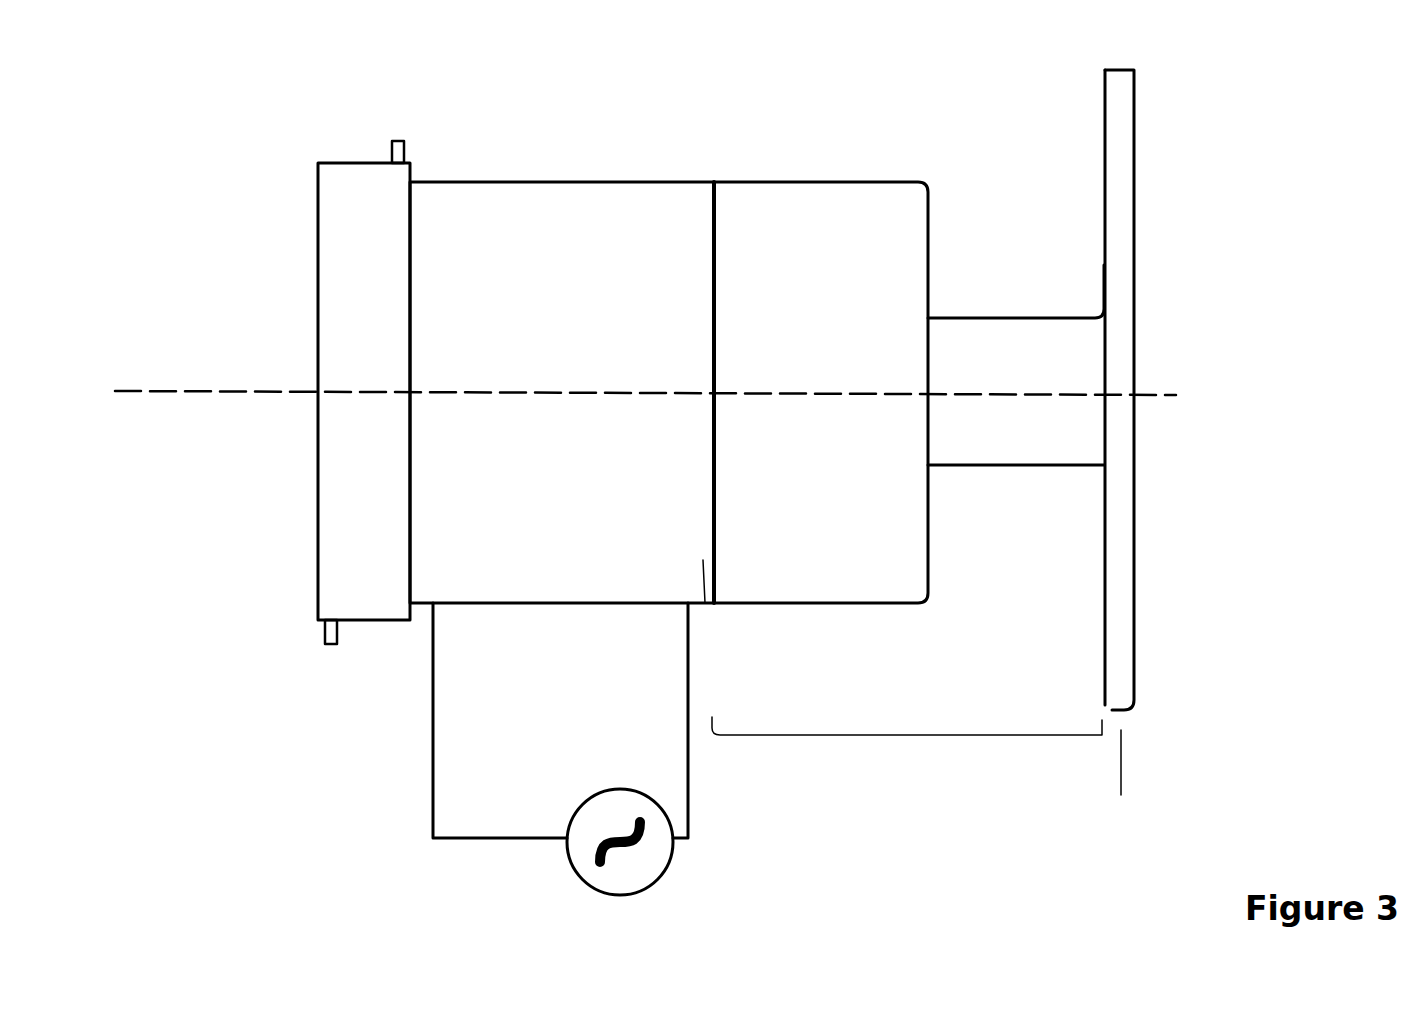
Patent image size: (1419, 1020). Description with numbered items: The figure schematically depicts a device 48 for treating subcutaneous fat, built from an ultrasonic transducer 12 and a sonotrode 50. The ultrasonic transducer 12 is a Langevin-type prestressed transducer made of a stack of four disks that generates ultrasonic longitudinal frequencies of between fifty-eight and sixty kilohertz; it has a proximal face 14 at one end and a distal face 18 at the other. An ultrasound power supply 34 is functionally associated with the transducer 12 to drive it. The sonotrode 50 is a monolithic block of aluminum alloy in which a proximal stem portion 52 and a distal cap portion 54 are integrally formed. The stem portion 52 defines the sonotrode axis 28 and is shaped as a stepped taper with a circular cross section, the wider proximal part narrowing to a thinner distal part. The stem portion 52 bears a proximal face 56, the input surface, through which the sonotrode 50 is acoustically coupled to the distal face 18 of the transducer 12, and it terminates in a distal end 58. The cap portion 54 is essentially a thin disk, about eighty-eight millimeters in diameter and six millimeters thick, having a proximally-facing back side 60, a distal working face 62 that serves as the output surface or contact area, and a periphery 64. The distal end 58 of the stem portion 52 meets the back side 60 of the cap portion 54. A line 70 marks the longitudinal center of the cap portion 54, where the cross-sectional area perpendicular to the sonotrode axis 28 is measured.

The ultrasonic transducer 12 is at (543, 182).
The proximal face 14 is at (410, 200).
The distal face 18 is at (720, 218).
The sonotrode axis 28 is at (1155, 398).
The ultrasound power supply 34 is at (565, 855).
The device 48 is at (268, 105).
The sonotrode 50 is at (752, 60).
The proximal stem portion 52 is at (930, 737).
The distal cap portion 54 is at (1117, 577).
The proximal face 56 is at (705, 603).
The distal end 58 is at (1090, 330).
The back side 60 is at (1099, 147).
The distal working face 62 is at (1138, 222).
The periphery 64 is at (1118, 70).
The longitudinal center 70 is at (1118, 771).